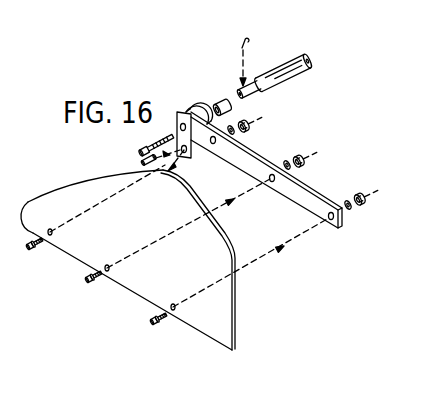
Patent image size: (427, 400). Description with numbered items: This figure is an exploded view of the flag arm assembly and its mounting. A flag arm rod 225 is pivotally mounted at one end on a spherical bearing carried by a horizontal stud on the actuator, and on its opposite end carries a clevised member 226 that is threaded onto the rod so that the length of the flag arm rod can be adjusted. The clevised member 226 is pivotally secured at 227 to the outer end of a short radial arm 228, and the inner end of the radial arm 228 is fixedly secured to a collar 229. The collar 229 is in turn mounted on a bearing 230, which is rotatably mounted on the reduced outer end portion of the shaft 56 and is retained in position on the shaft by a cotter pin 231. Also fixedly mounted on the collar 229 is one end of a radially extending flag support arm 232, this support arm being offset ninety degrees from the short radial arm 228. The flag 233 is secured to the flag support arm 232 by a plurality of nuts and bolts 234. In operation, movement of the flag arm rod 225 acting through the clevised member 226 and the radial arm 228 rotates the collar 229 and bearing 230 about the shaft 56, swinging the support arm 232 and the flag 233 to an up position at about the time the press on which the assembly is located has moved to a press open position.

The shaft 56 is at (290, 77).
The flag arm rod 225 is at (134, 157).
The clevised member 226 is at (158, 138).
The pivot connection 227 is at (143, 165).
The short radial arm 228 is at (190, 144).
The collar 229 is at (194, 110).
The bearing 230 is at (218, 99).
The cotter pin 231 is at (248, 42).
The flag support arm 232 is at (298, 196).
The flag 233 is at (219, 325).
The nuts and bolts 234 is at (97, 282).